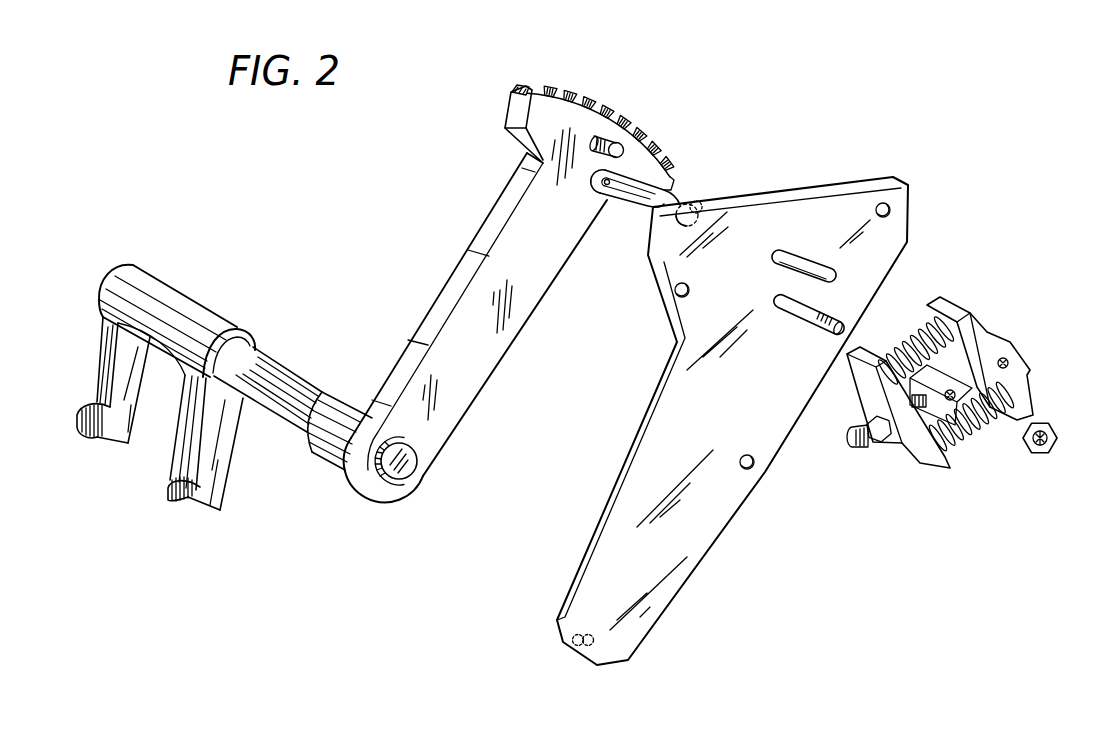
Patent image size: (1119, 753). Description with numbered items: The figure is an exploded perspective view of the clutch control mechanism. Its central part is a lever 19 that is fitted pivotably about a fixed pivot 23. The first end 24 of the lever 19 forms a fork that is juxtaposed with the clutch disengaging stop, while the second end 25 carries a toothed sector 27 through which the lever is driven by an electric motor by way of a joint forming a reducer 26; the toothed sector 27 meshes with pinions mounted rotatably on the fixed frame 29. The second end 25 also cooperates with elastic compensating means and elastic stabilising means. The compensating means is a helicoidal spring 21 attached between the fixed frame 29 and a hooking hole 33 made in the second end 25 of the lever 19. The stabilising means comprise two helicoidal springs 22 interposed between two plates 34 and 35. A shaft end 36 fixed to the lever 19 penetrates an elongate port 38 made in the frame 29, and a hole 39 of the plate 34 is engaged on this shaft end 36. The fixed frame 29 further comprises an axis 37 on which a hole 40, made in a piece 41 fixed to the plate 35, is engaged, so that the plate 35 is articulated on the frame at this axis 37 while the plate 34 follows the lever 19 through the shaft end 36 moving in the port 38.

The lever 19 is at (492, 352).
The helicoidal spring 21 is at (690, 198).
The helicoidal springs 22 is at (908, 337).
The fixed pivot 23 is at (407, 472).
The first end 24 is at (190, 500).
The second end 25 is at (505, 126).
The reducer 26 is at (626, 123).
The toothed sector 27 is at (567, 95).
The fixed frame 29 is at (768, 470).
The hooking hole 33 is at (608, 188).
The plate 34 is at (1031, 405).
The plate 35 is at (920, 455).
The shaft end 36 is at (622, 150).
The axis 37 is at (818, 333).
The elongate port 38 is at (781, 249).
The hole 39 is at (1007, 360).
The hole 40 is at (952, 390).
The piece 41 is at (987, 438).